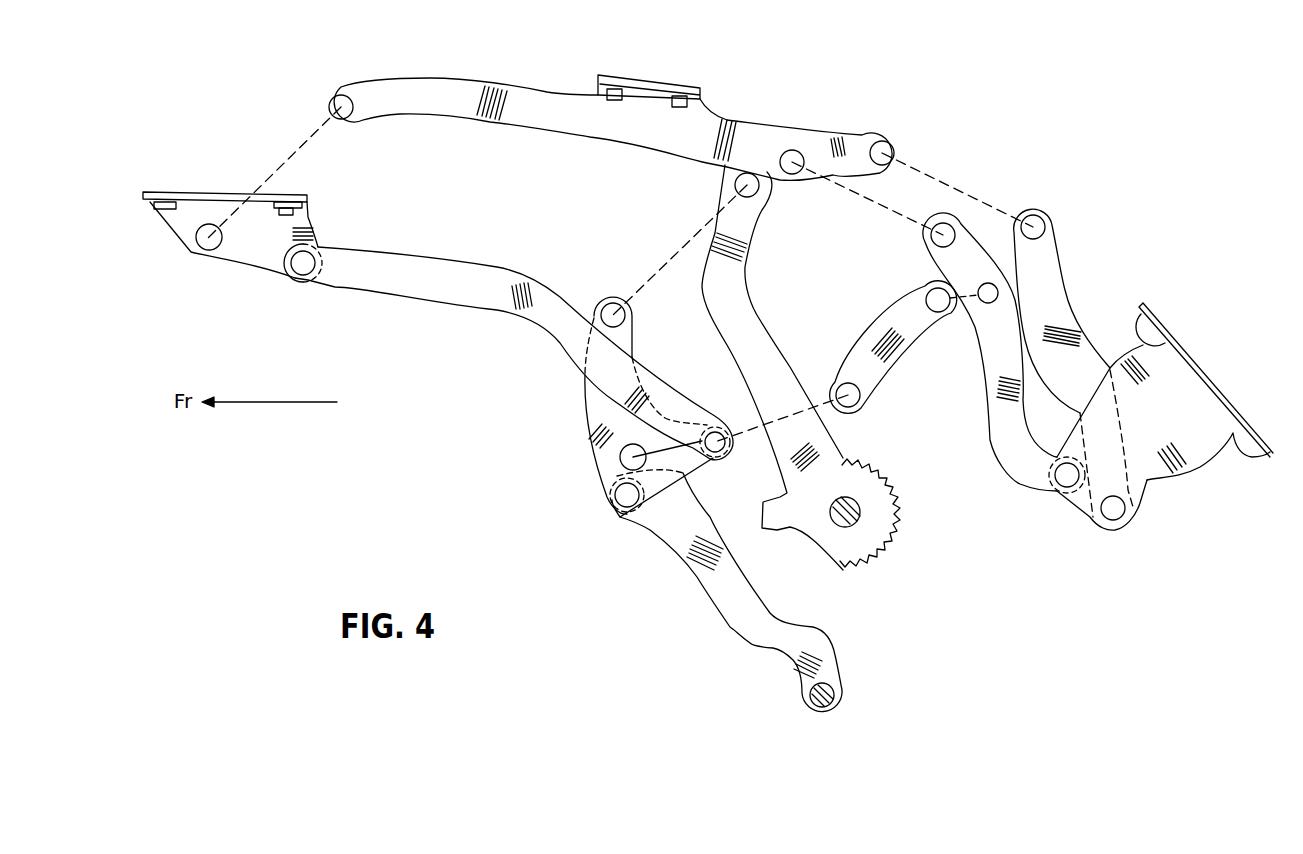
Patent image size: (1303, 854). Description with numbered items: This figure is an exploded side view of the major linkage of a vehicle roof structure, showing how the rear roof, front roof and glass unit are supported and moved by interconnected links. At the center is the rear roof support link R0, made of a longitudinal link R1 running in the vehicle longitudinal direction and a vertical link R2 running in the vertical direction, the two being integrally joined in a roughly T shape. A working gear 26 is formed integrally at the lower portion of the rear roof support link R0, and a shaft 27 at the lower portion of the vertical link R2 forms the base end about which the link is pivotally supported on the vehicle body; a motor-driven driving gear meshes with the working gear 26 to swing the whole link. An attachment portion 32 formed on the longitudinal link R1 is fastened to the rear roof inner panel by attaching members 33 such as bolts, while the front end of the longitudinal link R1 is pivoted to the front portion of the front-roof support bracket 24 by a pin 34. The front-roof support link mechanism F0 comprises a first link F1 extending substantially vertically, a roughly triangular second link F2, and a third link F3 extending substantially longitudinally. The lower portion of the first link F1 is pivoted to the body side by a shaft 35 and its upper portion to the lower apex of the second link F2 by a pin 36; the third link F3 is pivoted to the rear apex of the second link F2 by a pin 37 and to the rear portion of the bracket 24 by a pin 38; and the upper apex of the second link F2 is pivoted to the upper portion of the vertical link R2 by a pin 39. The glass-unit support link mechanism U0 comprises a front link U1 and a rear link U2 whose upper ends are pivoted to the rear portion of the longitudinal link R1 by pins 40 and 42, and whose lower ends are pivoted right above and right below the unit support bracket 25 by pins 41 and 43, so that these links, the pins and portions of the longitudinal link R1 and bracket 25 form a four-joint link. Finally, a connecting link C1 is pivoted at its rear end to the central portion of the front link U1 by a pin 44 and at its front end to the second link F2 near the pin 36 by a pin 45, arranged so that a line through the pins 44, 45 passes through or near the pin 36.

The rear roof support link R0 is at (552, 88).
The longitudinal link R1 is at (542, 118).
The vertical link R2 is at (767, 340).
The front-roof support link mechanism F0 is at (422, 255).
The first link F1 is at (697, 578).
The second link F2 is at (580, 417).
The third link F3 is at (432, 304).
The glass-unit support link mechanism U0 is at (983, 377).
The front link U1 is at (990, 425).
The rear link U2 is at (1063, 263).
The connecting link C1 is at (882, 373).
The front-roof support bracket 24 is at (178, 227).
The unit support bracket 25 is at (1212, 467).
The working gear 26 is at (905, 510).
The shaft 27 is at (833, 522).
The attachment portion 32 is at (656, 74).
The attaching member 33 is at (613, 101).
The pin 34 is at (275, 165).
The shaft 35 is at (830, 710).
The pin 36 is at (617, 503).
The pin 37 is at (725, 452).
The pin 38 is at (299, 280).
The pin 39 is at (683, 247).
The pin 40 is at (847, 188).
The pin 41 is at (1062, 483).
The pin 42 is at (960, 187).
The pin 43 is at (1115, 518).
The pin 44 is at (968, 296).
The pin 45 is at (753, 421).